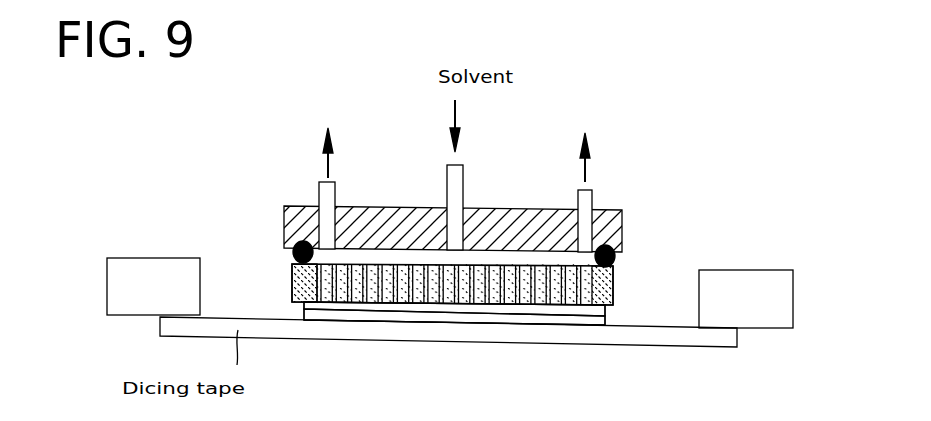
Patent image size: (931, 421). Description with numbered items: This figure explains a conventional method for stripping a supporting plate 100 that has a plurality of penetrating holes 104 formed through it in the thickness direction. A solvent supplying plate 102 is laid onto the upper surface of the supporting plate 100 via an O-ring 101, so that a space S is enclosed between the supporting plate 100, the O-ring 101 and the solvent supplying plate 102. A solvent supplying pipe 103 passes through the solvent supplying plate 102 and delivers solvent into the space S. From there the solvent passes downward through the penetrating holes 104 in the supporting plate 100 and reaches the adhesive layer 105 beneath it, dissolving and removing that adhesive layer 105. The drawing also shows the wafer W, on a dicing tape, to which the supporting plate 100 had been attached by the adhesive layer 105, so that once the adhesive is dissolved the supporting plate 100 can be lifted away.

The supporting plate 100 is at (292, 282).
The O-ring 101 is at (613, 260).
The solvent supplying plate 102 is at (376, 213).
The solvent supplying pipe 103 is at (455, 182).
The penetrating holes 104 is at (557, 308).
The adhesive layer 105 is at (485, 312).
The space S is at (530, 264).
The wafer W is at (369, 318).